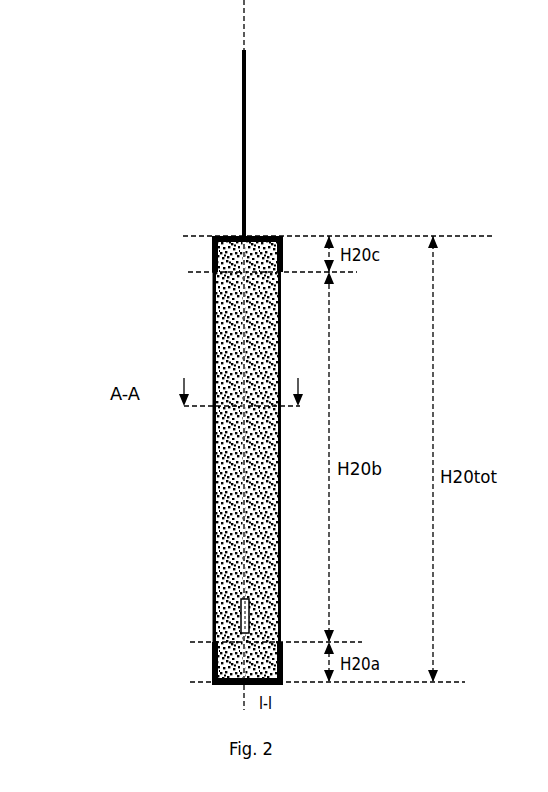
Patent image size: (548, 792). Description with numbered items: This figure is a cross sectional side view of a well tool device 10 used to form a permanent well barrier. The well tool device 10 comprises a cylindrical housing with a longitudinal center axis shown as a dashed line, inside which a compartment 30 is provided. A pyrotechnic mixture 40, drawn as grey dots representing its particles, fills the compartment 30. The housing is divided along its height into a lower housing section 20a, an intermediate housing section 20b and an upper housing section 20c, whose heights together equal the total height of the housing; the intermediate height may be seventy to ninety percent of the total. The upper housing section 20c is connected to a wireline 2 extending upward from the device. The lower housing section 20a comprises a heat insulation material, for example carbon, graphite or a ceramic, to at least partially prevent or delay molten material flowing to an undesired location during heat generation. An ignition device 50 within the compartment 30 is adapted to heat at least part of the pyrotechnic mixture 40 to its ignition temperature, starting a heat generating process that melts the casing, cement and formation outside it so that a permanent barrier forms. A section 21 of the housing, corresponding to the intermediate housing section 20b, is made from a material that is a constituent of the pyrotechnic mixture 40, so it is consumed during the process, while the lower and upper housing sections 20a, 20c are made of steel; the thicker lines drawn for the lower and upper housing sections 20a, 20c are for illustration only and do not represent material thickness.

The wireline 2 is at (245, 113).
The well tool device 10 is at (141, 198).
The lower housing section 20a is at (212, 663).
The intermediate housing section 20b is at (213, 502).
The upper housing section 20c is at (212, 254).
The section of the housing 21 is at (202, 472).
The compartment 30 is at (247, 460).
The pyrotechnic mixture 40 is at (235, 361).
The ignition device 50 is at (241, 600).